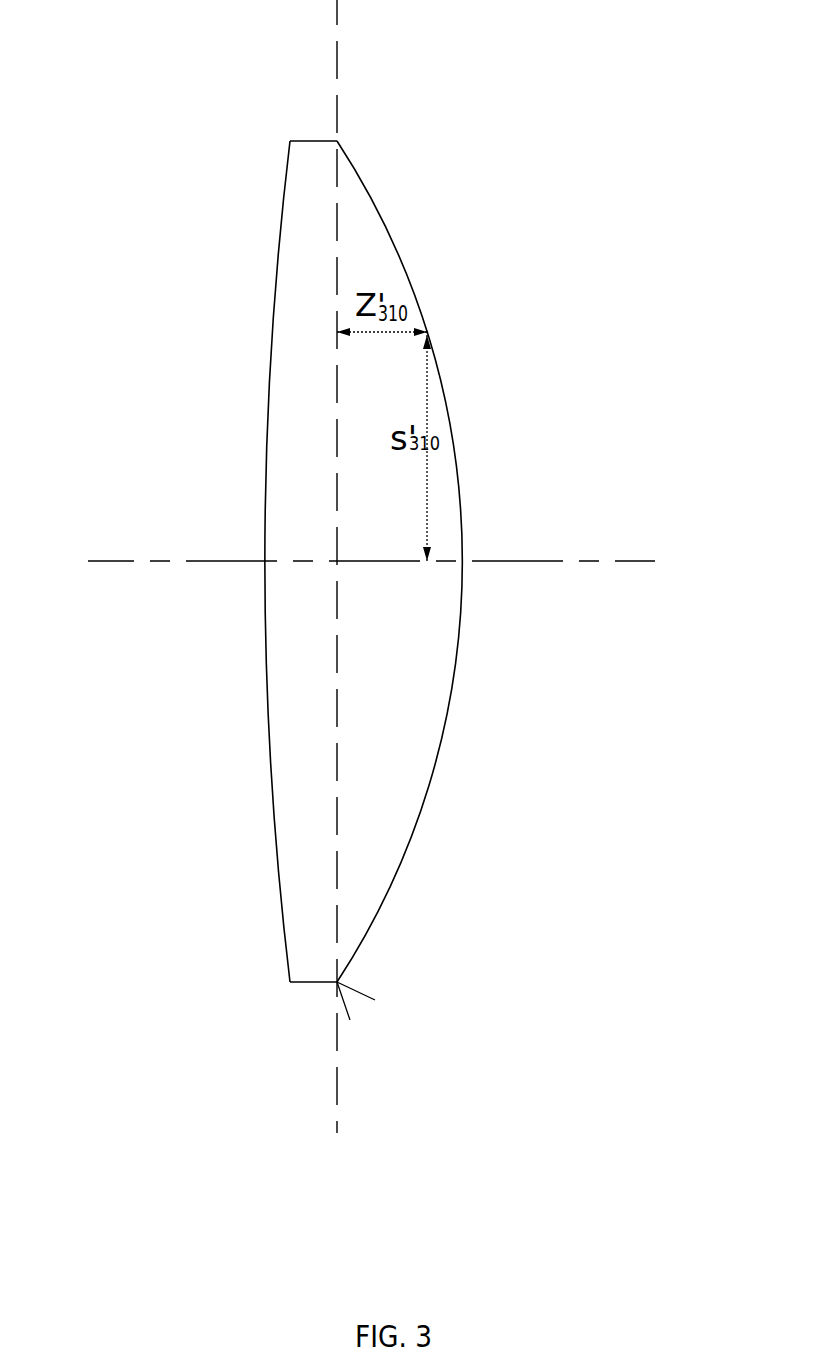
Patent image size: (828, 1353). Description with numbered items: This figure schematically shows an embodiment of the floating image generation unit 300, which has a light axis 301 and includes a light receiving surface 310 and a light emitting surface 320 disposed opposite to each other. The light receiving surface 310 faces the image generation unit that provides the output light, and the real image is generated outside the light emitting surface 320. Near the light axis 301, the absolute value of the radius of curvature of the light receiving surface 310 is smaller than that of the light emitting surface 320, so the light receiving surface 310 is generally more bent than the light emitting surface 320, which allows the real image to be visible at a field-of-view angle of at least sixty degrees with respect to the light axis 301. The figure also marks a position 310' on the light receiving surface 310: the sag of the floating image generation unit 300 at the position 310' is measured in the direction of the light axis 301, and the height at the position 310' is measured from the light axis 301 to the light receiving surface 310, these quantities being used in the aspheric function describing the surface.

The floating image generation unit 300 is at (342, 560).
The light receiving surface 310 is at (417, 514).
The light emitting surface 320 is at (278, 248).
The position of the light receiving surface 310' is at (489, 316).
The light axis 301 is at (520, 561).